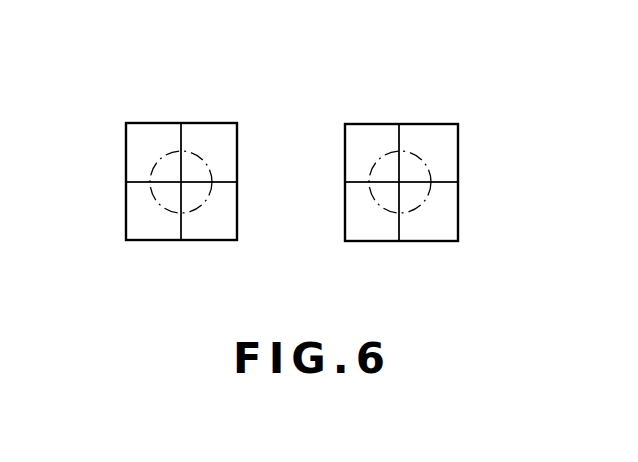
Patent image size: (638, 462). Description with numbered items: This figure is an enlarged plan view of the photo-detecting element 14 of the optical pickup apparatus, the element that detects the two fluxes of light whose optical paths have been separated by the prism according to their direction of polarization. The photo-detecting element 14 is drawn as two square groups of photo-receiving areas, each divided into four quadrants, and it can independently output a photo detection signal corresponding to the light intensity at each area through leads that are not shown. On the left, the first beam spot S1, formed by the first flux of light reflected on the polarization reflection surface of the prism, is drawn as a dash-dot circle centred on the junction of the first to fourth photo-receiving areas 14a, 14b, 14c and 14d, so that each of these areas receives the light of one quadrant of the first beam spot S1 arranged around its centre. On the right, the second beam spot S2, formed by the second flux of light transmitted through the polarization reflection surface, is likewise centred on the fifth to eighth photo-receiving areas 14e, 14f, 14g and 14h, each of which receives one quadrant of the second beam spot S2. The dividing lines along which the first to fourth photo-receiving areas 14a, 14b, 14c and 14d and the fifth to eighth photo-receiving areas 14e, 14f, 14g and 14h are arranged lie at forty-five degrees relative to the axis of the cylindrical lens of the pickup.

The photo-detecting element 14 is at (318, 110).
The first photo-receiving area 14a is at (151, 135).
The second photo-receiving area 14b is at (226, 136).
The third photo-receiving area 14c is at (225, 229).
The fourth photo-receiving area 14d is at (150, 230).
The fifth photo-receiving area 14e is at (373, 131).
The sixth photo-receiving area 14f is at (440, 138).
The seventh photo-receiving area 14g is at (445, 236).
The eighth photo-receiving area 14h is at (373, 232).
The first beam spot S1 is at (150, 174).
The second beam spot S2 is at (430, 170).